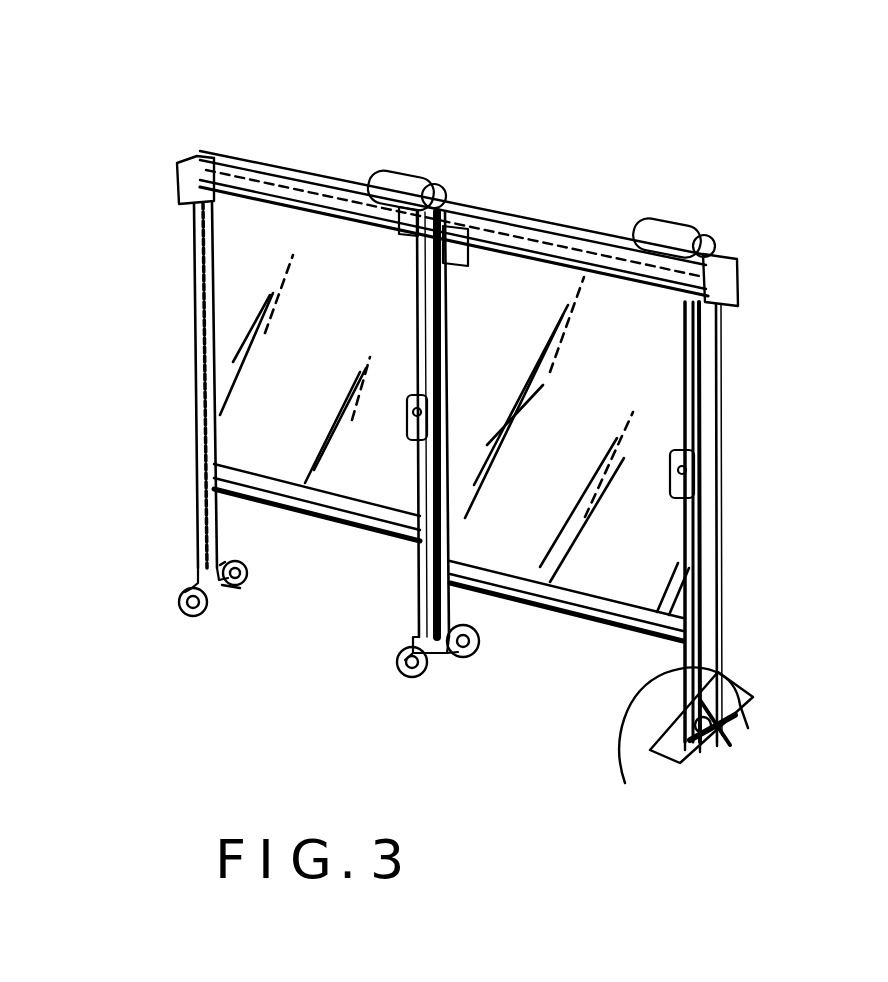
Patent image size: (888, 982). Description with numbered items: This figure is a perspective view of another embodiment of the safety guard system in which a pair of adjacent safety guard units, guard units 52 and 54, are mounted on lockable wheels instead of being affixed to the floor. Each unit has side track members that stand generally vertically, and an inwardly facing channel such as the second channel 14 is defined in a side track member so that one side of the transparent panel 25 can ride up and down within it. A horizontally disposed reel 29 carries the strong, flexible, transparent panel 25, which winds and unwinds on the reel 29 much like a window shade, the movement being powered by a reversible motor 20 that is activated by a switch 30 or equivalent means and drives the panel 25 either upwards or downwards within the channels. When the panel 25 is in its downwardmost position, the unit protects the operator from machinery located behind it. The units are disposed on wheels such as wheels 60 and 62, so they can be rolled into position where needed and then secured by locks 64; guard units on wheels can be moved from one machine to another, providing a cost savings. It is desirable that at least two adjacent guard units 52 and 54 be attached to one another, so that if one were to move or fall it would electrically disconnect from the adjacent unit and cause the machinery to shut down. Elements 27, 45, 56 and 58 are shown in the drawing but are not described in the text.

The second channel 14 is at (264, 528).
The reversible motor 20 is at (412, 166).
The transparent panel 25 is at (225, 328).
The end cap 27 is at (183, 165).
The reel 29 is at (290, 190).
The switch 30 is at (410, 400).
The center post 45 is at (417, 288).
The guard unit 52 is at (437, 114).
The guard unit 54 is at (669, 162).
The base plate 56 is at (670, 712).
The wheel 58 is at (465, 665).
The wheel 60 is at (403, 658).
The wheel 62 is at (208, 595).
The lock 64 is at (675, 749).